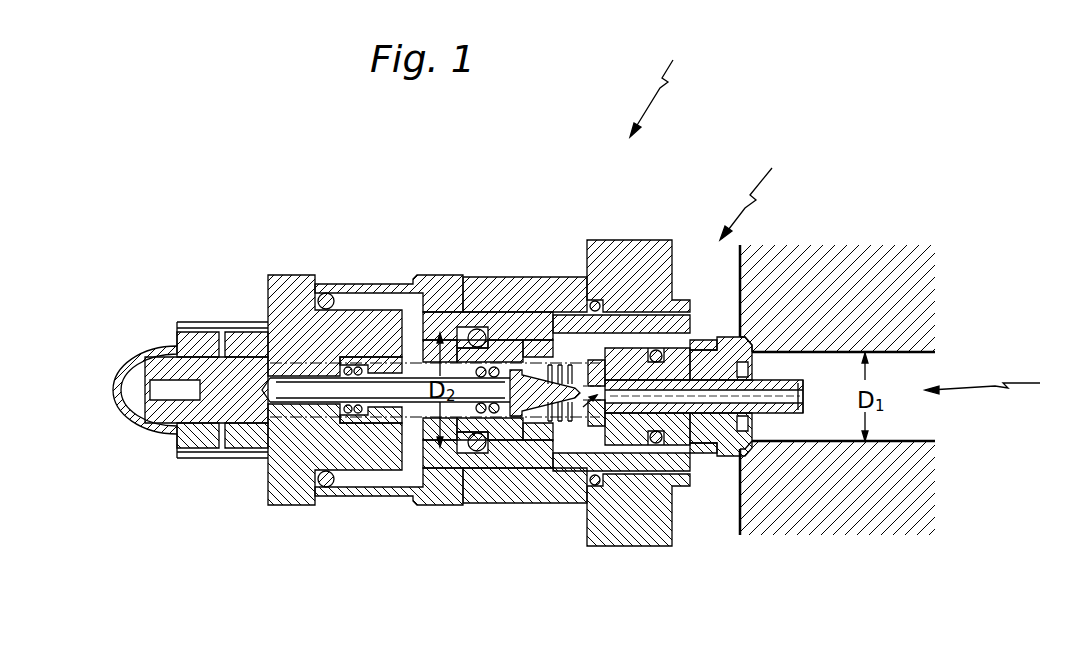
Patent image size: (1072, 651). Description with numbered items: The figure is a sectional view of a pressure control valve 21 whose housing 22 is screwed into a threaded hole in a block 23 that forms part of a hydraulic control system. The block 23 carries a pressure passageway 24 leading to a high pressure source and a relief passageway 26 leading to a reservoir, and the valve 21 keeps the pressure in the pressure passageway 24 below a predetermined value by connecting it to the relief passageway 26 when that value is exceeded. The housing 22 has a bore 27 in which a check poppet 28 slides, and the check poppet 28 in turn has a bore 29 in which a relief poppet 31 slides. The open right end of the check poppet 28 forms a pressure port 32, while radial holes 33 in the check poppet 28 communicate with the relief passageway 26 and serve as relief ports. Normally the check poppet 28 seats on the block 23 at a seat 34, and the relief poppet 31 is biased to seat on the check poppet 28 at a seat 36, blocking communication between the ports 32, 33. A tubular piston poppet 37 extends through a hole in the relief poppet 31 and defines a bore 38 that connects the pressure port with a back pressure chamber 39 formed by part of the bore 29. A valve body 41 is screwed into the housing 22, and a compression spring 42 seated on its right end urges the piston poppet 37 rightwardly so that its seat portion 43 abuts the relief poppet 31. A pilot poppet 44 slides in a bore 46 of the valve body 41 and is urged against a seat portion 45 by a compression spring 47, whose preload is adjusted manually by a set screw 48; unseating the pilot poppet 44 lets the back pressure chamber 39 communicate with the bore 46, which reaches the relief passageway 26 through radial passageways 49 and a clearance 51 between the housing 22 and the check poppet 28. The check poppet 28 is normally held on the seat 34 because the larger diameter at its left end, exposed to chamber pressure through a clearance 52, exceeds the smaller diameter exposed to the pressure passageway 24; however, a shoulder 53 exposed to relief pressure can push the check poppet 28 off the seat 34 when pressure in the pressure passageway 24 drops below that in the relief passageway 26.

The pressure control valve 21 is at (666, 86).
The housing 22 is at (441, 275).
The block 23 is at (612, 272).
The pressure passageway 24 is at (998, 383).
The relief passageway 26 is at (762, 192).
The bore 27 is at (565, 279).
The check poppet 28 is at (620, 500).
The bore 29 is at (585, 430).
The relief poppet 31 is at (700, 415).
The pressure port 32 is at (805, 352).
The radial holes 33 is at (708, 340).
The seat 34 is at (745, 320).
The seat 36 is at (740, 340).
The piston poppet 37 is at (800, 440).
The bore 38 is at (807, 400).
The back pressure chamber 39 is at (548, 470).
The valve body 41 is at (268, 478).
The compression spring 42 is at (540, 430).
The seat portion 43 is at (585, 393).
The pilot poppet 44 is at (400, 420).
The seat portion 45 is at (503, 330).
The bore 46 is at (455, 430).
The compression spring 47 is at (350, 415).
The set screw 48 is at (223, 400).
The radial passageways 49 is at (412, 345).
The clearance 51 is at (485, 325).
The clearance 52 is at (520, 325).
The shoulder 53 is at (703, 335).